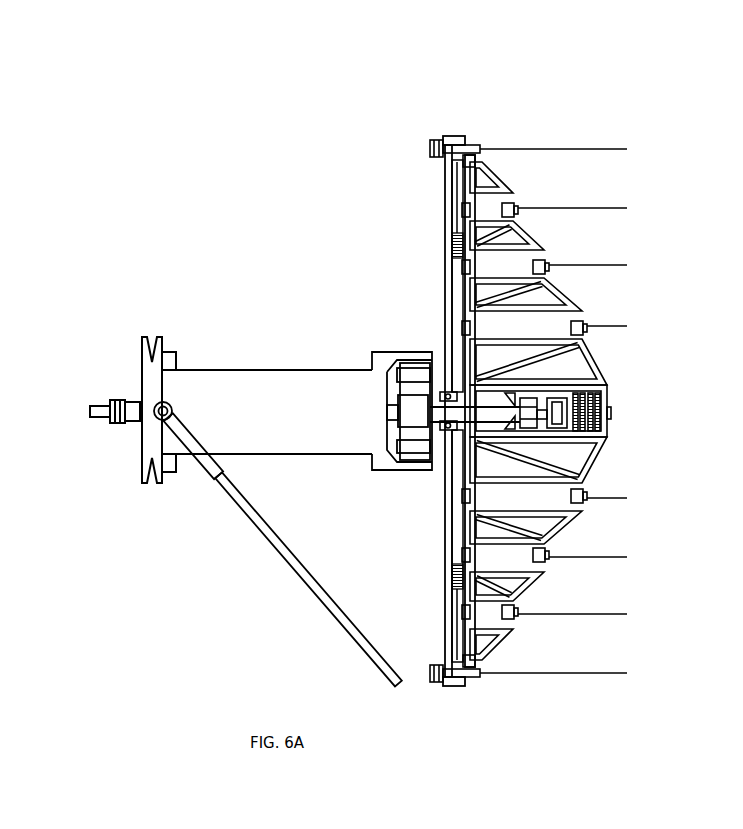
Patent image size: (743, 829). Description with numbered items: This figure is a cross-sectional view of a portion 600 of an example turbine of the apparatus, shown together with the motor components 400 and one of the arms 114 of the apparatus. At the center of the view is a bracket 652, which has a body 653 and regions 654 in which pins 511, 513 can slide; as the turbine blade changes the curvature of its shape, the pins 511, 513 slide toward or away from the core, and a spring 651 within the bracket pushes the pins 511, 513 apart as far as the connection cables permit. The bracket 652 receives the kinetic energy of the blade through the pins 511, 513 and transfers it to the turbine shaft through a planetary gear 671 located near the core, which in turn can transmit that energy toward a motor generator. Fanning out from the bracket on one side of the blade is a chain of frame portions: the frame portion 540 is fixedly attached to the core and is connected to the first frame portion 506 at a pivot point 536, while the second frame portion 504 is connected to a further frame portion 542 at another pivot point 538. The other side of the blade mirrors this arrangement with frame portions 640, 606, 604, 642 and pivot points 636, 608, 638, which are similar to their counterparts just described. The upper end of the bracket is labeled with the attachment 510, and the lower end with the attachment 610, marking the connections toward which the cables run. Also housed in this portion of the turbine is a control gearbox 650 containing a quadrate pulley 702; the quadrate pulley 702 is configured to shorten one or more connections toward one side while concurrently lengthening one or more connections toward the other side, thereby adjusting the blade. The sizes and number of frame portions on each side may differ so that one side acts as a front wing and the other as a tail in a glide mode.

The portion of the turbine 600 is at (178, 125).
The motor components 400 is at (242, 312).
The arm 114 is at (275, 553).
The planetary gear 671 is at (396, 395).
The regions 654 is at (443, 170).
The bracket 652 is at (448, 298).
The body 653 is at (452, 190).
The spring 651 is at (452, 240).
The pin 511 is at (471, 140).
The pin 513 is at (482, 682).
The upper attachment point A/B 510 is at (482, 157).
The lower attachment point C/D 610 is at (478, 667).
The frame portion 542 is at (498, 178).
The pivot point 538 is at (516, 203).
The second frame portion 504 is at (524, 238).
The first frame portion 506 is at (567, 302).
The pivot point 536 is at (585, 322).
The frame portion 540 is at (598, 357).
The frame portion 640 is at (604, 447).
The pivot point 636 is at (585, 505).
The frame portion 606 is at (553, 530).
The pivot point 608 is at (543, 563).
The frame portion 604 is at (518, 588).
The pivot point 638 is at (512, 616).
The frame portion 642 is at (490, 645).
The quadrate pulley 702 is at (580, 400).
The control gearbox 650 is at (563, 412).